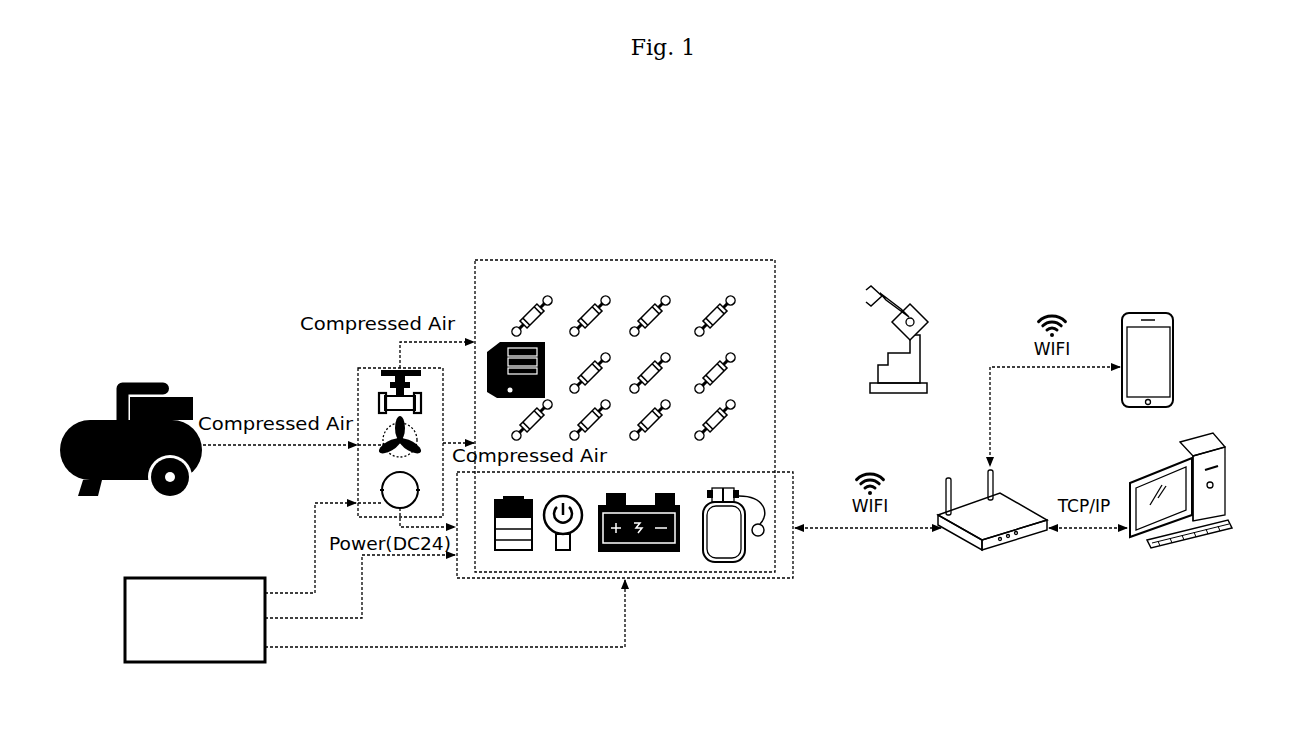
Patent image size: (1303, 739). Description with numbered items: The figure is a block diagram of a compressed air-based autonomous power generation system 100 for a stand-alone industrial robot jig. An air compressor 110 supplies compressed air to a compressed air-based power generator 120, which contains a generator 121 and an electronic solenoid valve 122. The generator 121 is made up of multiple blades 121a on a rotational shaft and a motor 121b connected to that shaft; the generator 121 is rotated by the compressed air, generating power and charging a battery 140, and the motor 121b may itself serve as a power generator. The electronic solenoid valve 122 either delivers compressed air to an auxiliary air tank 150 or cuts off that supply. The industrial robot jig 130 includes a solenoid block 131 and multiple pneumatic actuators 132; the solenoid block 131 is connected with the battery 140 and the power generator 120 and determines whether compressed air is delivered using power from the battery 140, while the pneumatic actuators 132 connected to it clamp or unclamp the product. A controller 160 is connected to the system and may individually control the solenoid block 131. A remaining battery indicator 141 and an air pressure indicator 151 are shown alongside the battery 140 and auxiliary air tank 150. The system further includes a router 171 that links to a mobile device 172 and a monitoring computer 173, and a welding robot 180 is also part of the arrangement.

The compressed air-based autonomous power generation system 100 is at (979, 262).
The air compressor 110 is at (134, 386).
The compressed air-based power generator 120 is at (358, 373).
The generator 121 is at (322, 462).
The blades 121a is at (358, 452).
The motor 121b is at (358, 481).
The electronic solenoid valve 122 is at (380, 401).
The industrial robot jig 130 is at (623, 258).
The solenoid block 131 is at (487, 342).
The pneumatic actuators 132 is at (740, 299).
The battery 140 is at (640, 553).
The remaining battery indicator 141 is at (514, 552).
The auxiliary air tank 150 is at (726, 563).
The air pressure indicator 151 is at (563, 552).
The controller 160 is at (195, 665).
The router 171 is at (1013, 545).
The mobile device 172 is at (1147, 311).
The monitoring computer 173 is at (1228, 484).
The welding robot 180 is at (882, 280).